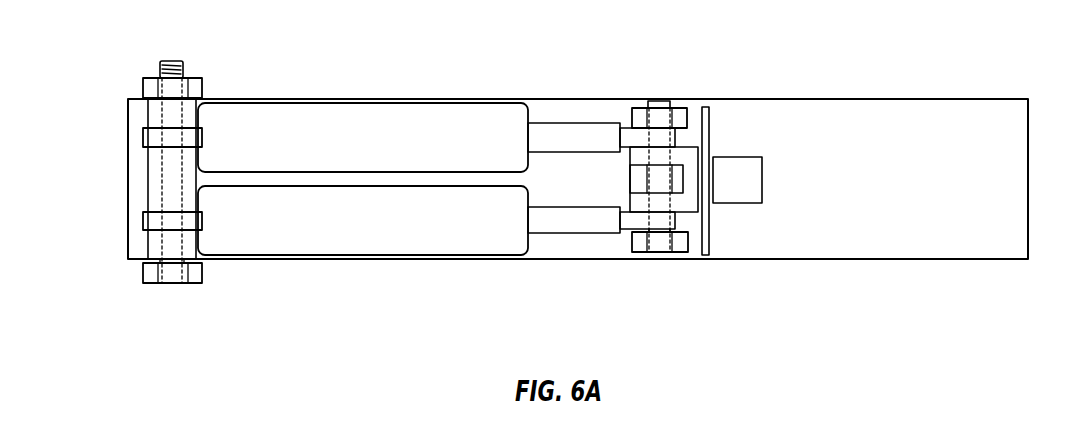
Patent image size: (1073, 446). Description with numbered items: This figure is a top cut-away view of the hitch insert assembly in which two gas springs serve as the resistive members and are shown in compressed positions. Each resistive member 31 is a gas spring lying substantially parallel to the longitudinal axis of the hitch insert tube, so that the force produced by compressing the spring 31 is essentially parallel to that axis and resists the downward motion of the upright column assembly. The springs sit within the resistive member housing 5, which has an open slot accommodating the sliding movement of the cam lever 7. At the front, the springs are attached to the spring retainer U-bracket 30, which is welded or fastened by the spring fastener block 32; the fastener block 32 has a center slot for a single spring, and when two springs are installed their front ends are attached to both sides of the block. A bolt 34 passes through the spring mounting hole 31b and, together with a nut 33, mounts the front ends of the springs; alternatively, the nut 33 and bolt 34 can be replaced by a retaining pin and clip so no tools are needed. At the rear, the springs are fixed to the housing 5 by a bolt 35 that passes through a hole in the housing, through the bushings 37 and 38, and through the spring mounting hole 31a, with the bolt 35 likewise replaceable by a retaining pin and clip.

The resistive member housing 5 is at (899, 194).
The cam lever 7 is at (745, 195).
The spring retainer U-bracket 30 is at (610, 188).
The resistive member 31 is at (369, 153).
The spring mounting hole 31a is at (121, 157).
The spring mounting hole 31b is at (593, 275).
The spring fastener block 32 is at (674, 222).
The nut 33 is at (624, 151).
The bolt 34 is at (635, 283).
The bolt 35 is at (131, 302).
The bushing 37 is at (128, 179).
The bushing 38 is at (131, 169).